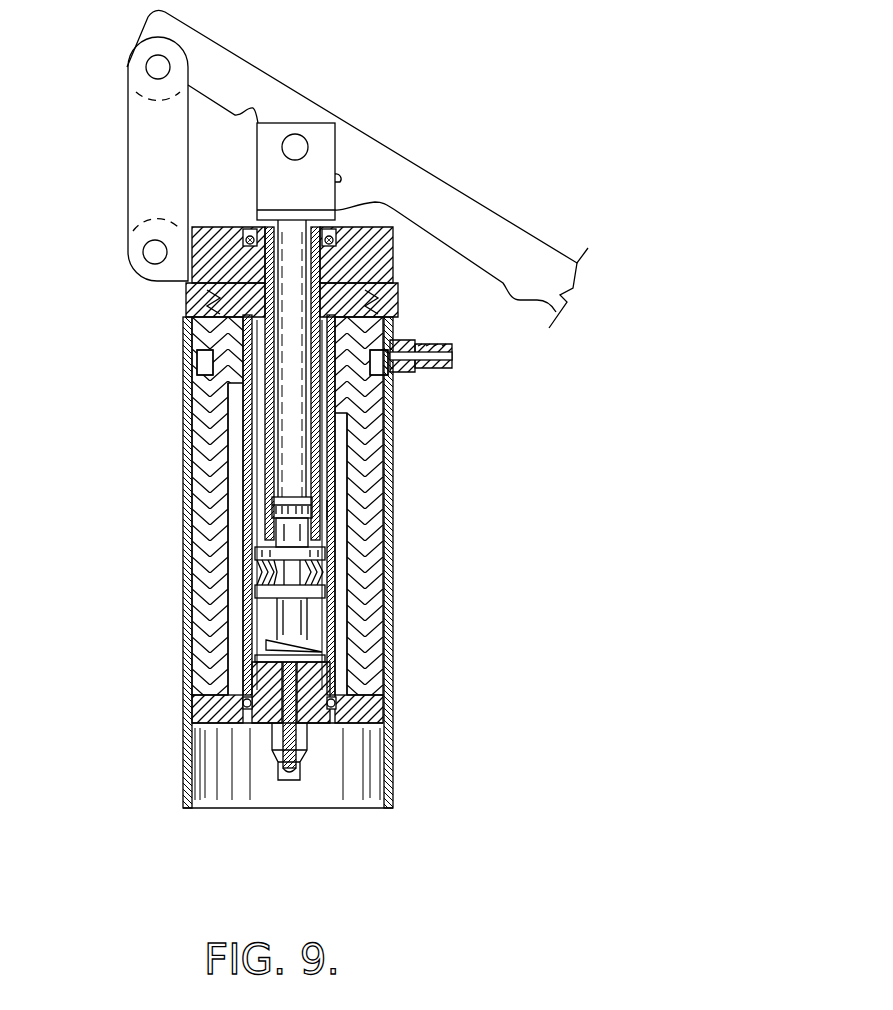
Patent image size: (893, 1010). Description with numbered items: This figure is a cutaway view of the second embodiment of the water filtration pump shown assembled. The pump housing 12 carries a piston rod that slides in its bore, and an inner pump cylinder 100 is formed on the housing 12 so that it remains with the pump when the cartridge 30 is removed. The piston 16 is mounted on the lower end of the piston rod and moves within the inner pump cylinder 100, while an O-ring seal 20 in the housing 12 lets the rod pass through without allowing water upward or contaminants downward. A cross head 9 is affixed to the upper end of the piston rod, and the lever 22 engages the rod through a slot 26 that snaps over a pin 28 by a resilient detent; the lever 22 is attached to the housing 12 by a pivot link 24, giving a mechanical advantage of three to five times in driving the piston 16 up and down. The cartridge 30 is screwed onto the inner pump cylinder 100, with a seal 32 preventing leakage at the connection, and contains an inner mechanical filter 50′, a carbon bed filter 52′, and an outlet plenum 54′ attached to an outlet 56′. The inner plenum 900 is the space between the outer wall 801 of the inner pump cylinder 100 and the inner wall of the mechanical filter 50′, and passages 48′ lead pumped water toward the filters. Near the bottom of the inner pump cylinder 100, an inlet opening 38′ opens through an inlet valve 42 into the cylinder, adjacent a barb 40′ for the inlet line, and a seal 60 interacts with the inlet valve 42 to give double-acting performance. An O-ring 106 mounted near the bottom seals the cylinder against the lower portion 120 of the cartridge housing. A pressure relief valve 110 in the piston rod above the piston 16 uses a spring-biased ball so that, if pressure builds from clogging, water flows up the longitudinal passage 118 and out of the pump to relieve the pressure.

The cross head 9 is at (278, 186).
The pump housing 12 is at (393, 260).
The piston 16 is at (265, 619).
The O-ring seal 20 is at (348, 236).
The lever 22 is at (497, 247).
The pivot link 24 is at (158, 176).
The slot 26 is at (345, 176).
The pin 28 is at (297, 140).
The cartridge 30 is at (423, 536).
The seal 32 is at (395, 450).
The inlet opening 38′ is at (283, 768).
The barb 40′ is at (272, 753).
The inlet valve 42 is at (293, 648).
The fluid passage 48′ is at (410, 388).
The inner mechanical filter 50′ is at (345, 487).
The carbon bed filter 52′ is at (350, 568).
The outlet plenum 54′ is at (197, 358).
The outlet 56′ is at (452, 363).
The seal 60 is at (250, 566).
The inner pump cylinder 100 is at (169, 529).
The O-ring 106 is at (337, 702).
The pressure relief valve 110 is at (270, 517).
The longitudinal passage 118 is at (293, 292).
The lower portion of the cartridge housing 120 is at (355, 724).
The outer wall 801 is at (410, 388).
The inner plenum 900 is at (337, 508).